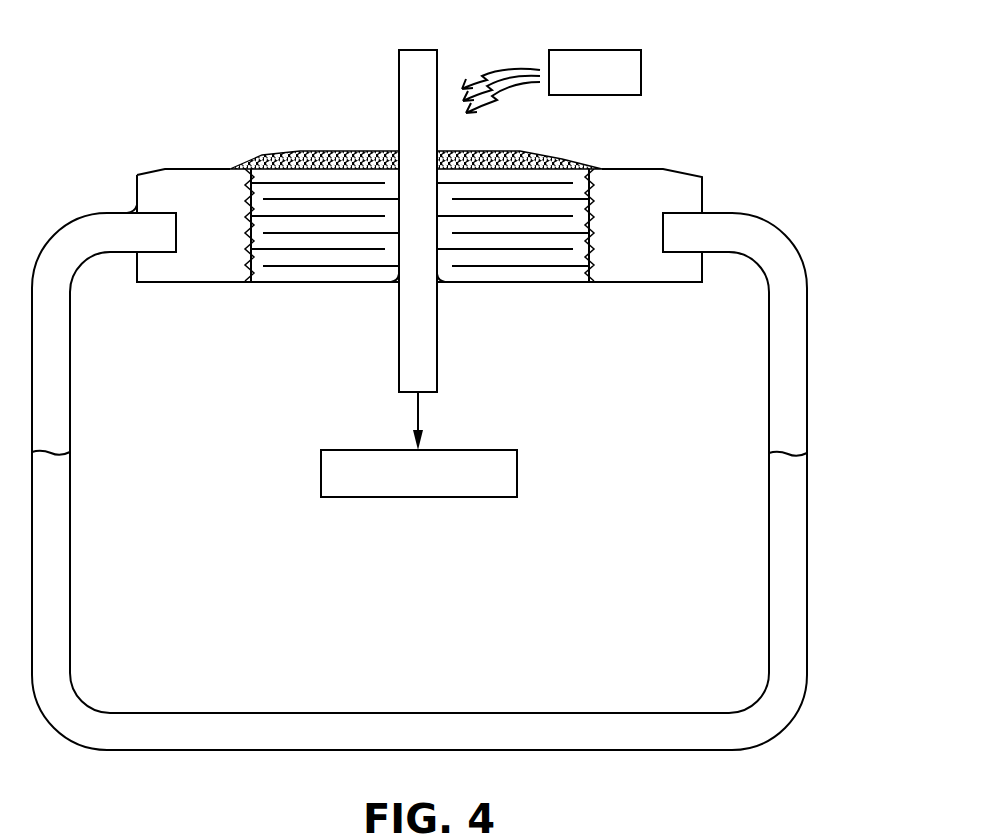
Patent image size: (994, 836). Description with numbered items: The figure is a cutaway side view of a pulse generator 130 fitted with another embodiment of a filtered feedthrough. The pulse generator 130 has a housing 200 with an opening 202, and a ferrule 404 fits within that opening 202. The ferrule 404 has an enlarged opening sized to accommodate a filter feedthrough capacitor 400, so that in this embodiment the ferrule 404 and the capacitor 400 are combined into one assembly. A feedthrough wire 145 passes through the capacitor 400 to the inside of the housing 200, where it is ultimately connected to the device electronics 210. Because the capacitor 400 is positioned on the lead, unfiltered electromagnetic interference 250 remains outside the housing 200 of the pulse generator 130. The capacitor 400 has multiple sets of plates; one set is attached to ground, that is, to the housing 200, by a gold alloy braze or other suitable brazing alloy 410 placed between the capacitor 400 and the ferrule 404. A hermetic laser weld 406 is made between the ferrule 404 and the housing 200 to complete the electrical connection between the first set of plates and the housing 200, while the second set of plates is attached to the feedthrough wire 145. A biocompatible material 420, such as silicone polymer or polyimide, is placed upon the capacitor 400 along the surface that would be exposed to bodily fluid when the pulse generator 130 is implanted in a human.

The pulse generator 130 is at (461, 464).
The feedthrough wire 145 is at (417, 48).
The housing 200 is at (807, 409).
The opening 202 is at (663, 240).
The device electronics 210 is at (342, 449).
The unfiltered electromagnetic interference 250 is at (598, 48).
The filter feedthrough capacitor 400 is at (508, 285).
The ferrule 404 is at (630, 182).
The hermetic laser weld 406 is at (703, 210).
The brazing alloy 410 is at (253, 274).
The biocompatible material 420 is at (505, 152).